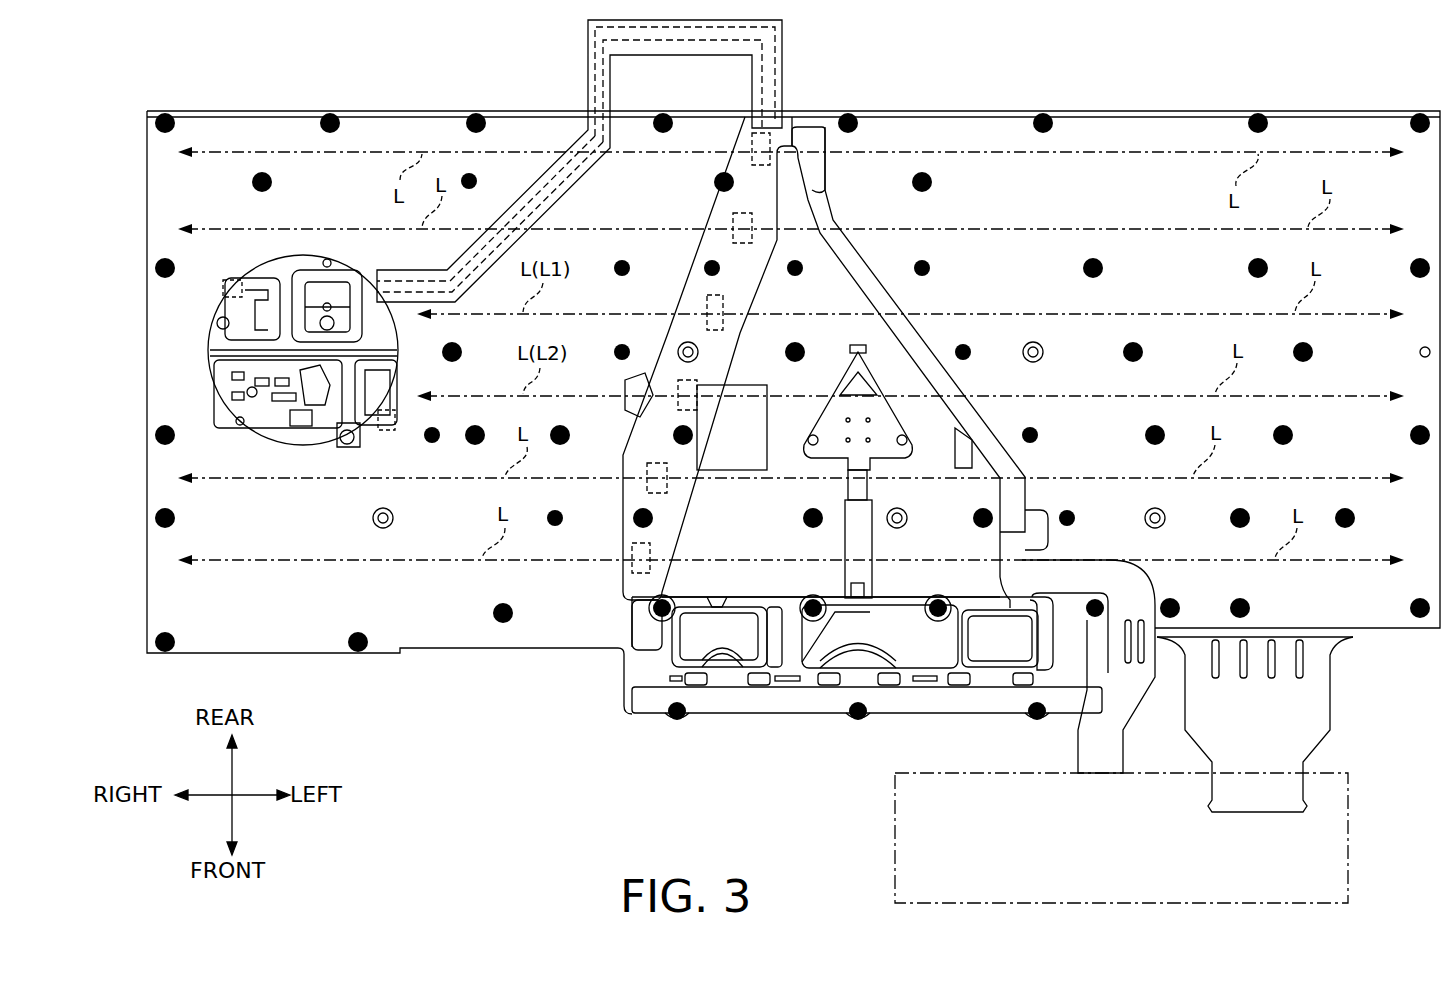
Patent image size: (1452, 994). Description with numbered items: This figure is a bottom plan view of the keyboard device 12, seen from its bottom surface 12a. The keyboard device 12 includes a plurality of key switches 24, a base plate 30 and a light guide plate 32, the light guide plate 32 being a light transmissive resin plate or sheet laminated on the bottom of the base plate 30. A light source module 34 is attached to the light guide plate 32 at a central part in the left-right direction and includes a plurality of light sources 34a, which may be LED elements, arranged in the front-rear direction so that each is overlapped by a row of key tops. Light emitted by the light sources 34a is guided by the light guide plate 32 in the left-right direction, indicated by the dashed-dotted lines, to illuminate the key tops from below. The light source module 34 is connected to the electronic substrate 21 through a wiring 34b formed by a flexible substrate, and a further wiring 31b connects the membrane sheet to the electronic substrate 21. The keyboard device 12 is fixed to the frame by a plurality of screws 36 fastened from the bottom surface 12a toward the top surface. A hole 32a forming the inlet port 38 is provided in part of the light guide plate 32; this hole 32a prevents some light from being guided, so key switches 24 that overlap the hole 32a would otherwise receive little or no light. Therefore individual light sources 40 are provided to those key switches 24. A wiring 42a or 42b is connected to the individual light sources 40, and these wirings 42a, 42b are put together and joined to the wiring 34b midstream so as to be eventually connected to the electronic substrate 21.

The keyboard device 12 is at (147, 46).
The bottom surface 12a is at (147, 494).
The electronic substrate 21 is at (895, 850).
The key switches 24 is at (342, 295).
The base plate 30 is at (253, 395).
The wiring 31b is at (1320, 722).
The light guide plate 32 is at (756, 412).
The hole 32a is at (239, 389).
The light source module 34 is at (612, 572).
The light sources 34a is at (745, 133).
The wiring 34b is at (793, 128).
The screws 36 is at (264, 173).
The inlet port 38 is at (213, 378).
The individual light sources 40 is at (290, 265).
The wiring 42a is at (515, 200).
The wiring 42b is at (598, 160).